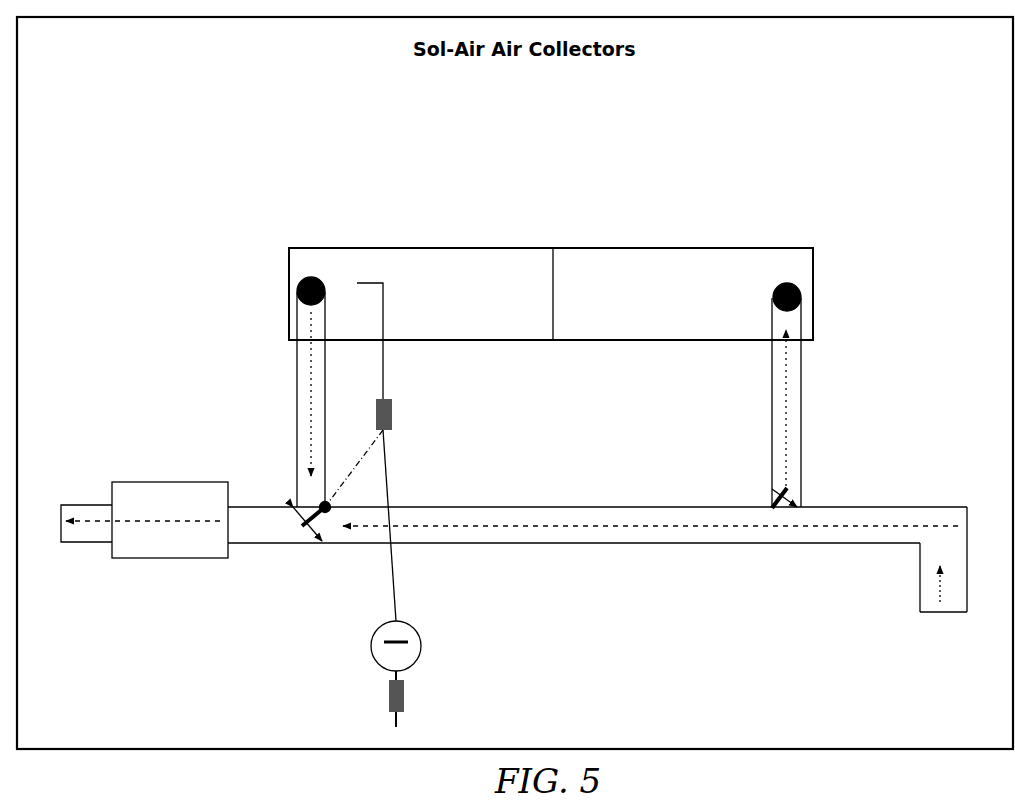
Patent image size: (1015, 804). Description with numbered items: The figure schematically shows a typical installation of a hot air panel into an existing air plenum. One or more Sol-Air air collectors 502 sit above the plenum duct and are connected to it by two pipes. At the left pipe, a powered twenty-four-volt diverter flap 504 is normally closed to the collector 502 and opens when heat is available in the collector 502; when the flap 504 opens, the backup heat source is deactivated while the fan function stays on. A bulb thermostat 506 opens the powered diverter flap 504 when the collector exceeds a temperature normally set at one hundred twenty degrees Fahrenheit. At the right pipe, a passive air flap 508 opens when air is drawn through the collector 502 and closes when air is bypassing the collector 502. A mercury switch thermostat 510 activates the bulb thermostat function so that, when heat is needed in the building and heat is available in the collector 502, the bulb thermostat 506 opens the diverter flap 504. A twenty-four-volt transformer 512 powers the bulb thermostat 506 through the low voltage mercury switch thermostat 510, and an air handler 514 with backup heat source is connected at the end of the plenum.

The air collector 502 is at (523, 247).
The powered diverter flap 504 is at (310, 500).
The bulb thermostat 506 is at (398, 397).
The passive air flap 508 is at (765, 495).
The mercury switch thermostat 510 is at (414, 622).
The transformer 512 is at (408, 694).
The air handler 514 is at (170, 481).